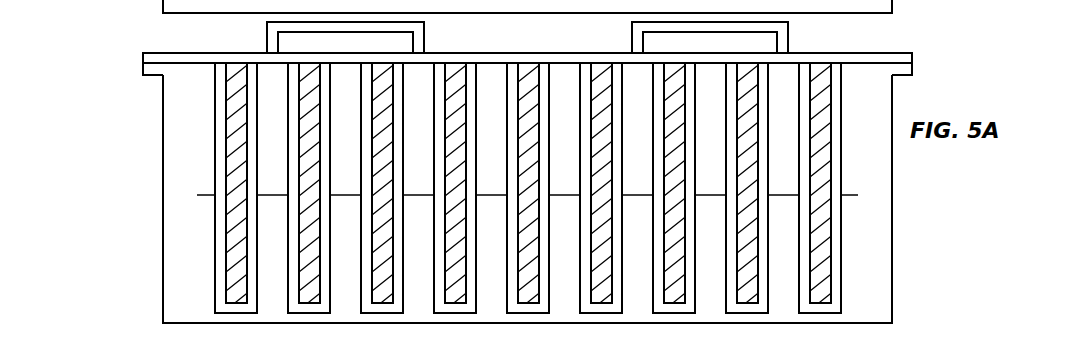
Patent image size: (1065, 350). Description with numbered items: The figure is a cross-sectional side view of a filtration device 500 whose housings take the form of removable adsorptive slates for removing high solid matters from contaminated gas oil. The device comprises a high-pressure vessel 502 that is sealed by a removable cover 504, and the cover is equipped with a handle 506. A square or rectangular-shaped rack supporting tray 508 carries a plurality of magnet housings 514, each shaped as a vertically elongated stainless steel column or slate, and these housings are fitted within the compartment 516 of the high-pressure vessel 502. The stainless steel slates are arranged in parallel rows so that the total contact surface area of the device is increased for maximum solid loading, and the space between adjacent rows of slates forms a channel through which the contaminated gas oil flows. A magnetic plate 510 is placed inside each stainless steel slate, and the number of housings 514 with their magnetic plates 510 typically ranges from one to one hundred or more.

The filtration device 500 is at (562, 161).
The high-pressure vessel 502 is at (893, 278).
The removable cover 504 is at (163, 54).
The handle 506 is at (790, 32).
The rack supporting tray 508 is at (845, 195).
The magnetic plate 510 is at (226, 180).
The magnet housing 514 is at (214, 128).
The compartment 516 is at (188, 257).